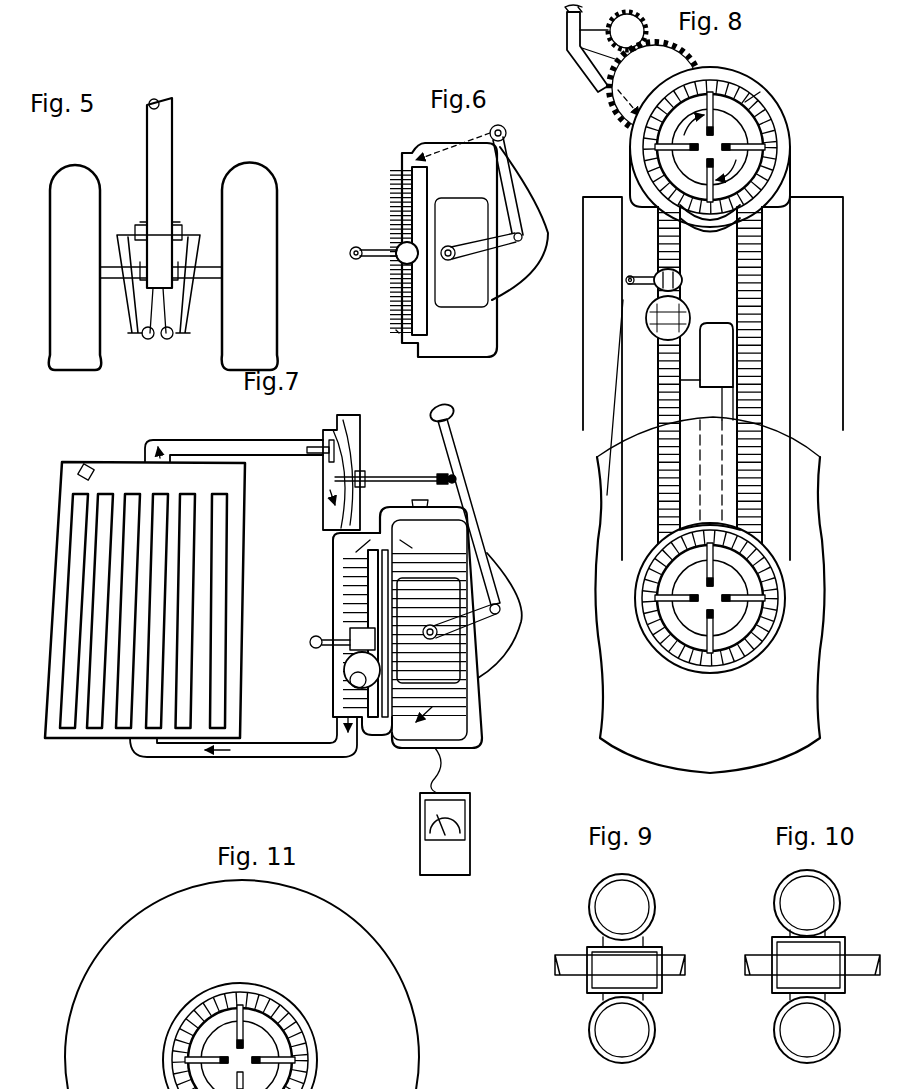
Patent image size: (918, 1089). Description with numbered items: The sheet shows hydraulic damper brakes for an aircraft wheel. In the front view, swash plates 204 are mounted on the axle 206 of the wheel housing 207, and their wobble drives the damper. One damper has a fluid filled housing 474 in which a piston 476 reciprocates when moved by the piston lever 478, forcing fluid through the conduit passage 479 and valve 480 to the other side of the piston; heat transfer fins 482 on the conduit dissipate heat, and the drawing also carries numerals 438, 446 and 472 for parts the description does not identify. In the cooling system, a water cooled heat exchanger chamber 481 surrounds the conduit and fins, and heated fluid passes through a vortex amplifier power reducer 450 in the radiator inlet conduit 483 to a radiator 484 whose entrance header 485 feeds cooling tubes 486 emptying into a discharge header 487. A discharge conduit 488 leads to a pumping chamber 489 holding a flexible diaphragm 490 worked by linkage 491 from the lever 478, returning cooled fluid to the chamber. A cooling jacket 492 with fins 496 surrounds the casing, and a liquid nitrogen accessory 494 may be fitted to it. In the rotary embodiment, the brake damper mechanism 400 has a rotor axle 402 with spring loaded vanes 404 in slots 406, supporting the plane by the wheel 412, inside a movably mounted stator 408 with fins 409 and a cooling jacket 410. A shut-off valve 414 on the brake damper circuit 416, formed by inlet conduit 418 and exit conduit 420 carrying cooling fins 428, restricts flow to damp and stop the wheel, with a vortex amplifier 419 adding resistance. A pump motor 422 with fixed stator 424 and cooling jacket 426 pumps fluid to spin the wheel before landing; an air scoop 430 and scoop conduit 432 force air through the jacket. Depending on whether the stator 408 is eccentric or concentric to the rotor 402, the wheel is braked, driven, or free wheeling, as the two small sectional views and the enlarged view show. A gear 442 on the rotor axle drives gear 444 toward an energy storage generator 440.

In FIG. 5, the swash plate 204 is at (128, 318).
In FIG. 5, the axle 206 is at (105, 272).
In FIG. 5, the wheel housing 207 is at (250, 182).
In FIG. 8, the rotary brake damper mechanism 400 is at (788, 575).
In FIG. 8, the rotor axle 402 is at (745, 601).
In FIG. 9, the rotor axle 402 is at (565, 978).
In FIG. 10, the rotor axle 402 is at (765, 976).
In FIG. 11, the rotor axle 402 is at (255, 1036).
In FIG. 8, the spring loaded vanes 404 is at (735, 653).
In FIG. 11, the spring loaded vanes 404 is at (280, 1048).
In FIG. 8, the slots 406 is at (752, 643).
In FIG. 8, the movably mounted stator 408 is at (702, 670).
In FIG. 9, the movably mounted stator 408 is at (592, 947).
In FIG. 10, the movably mounted stator 408 is at (775, 945).
In FIG. 11, the movably mounted stator 408 is at (305, 1072).
In FIG. 8, the fins 409 is at (760, 92).
In FIG. 8, the cooling jacket 410 is at (680, 666).
In FIG. 11, the cooling jacket 410 is at (290, 1058).
In FIG. 8, the wheel 412 is at (742, 745).
In FIG. 9, the wheel 412 is at (590, 900).
In FIG. 10, the wheel 412 is at (780, 900).
In FIG. 11, the wheel 412 is at (250, 937).
In FIG. 8, the shut-off valve 414 is at (647, 278).
In FIG. 8, the fluid brake damper circuit 416 is at (765, 412).
In FIG. 8, the inlet conduit 418 is at (660, 345).
In FIG. 8, the vortex amplifier 419 is at (646, 318).
In FIG. 8, the exit conduit 420 is at (765, 332).
In FIG. 8, the pump motor 422 is at (760, 125).
In FIG. 8, the stator 424 is at (768, 152).
In FIG. 8, the cooling jacket 426 is at (783, 178).
In FIG. 8, the cooling fins 428 is at (745, 382).
In FIG. 8, the air scoop 430 is at (713, 335).
In FIG. 8, the scoop conduit 432 is at (710, 447).
In FIG. 6, the lever 438 is at (484, 260).
In FIG. 7, the lever 438 is at (459, 621).
In FIG. 8, the generator 440 is at (603, 93).
In FIG. 8, the gear 442 is at (707, 44).
In FIG. 8, the gear 444 is at (590, 75).
In FIG. 8, the crank handle 446 is at (565, 18).
In FIG. 7, the vortex amplifier power reducer 450 is at (357, 705).
In FIG. 6, the control rod 472 is at (375, 262).
In FIG. 7, the control rod 472 is at (315, 636).
In FIG. 6, the housing 474 is at (475, 348).
In FIG. 7, the housing 474 is at (478, 750).
In FIG. 6, the piston 476 is at (478, 293).
In FIG. 7, the piston 476 is at (432, 668).
In FIG. 6, the piston lever 478 is at (510, 178).
In FIG. 7, the piston lever 478 is at (452, 443).
In FIG. 6, the conduit passage 479 is at (400, 338).
In FIG. 7, the conduit passage 479 is at (368, 725).
In FIG. 6, the valve 480 is at (398, 248).
In FIG. 7, the valve 480 is at (360, 643).
In FIG. 7, the water cooled heat exchanger chamber 481 is at (337, 550).
In FIG. 6, the heat transfer fins 482 is at (398, 180).
In FIG. 7, the heat transfer fins 482 is at (352, 682).
In FIG. 7, the radiator inlet conduit 483 is at (300, 760).
In FIG. 7, the radiator 484 is at (246, 578).
In FIG. 7, the entrance header 485 is at (100, 743).
In FIG. 7, the cooling tubes 486 is at (203, 530).
In FIG. 7, the discharge header 487 is at (108, 473).
In FIG. 7, the discharge conduit 488 is at (308, 444).
In FIG. 7, the pumping chamber 489 is at (328, 487).
In FIG. 7, the flexible diaphragm 490 is at (348, 455).
In FIG. 7, the linkage 491 is at (397, 478).
In FIG. 7, the cooling jacket 492 is at (474, 724).
In FIG. 7, the liquid nitrogen accessory 494 is at (472, 833).
In FIG. 7, the fins 496 is at (474, 710).